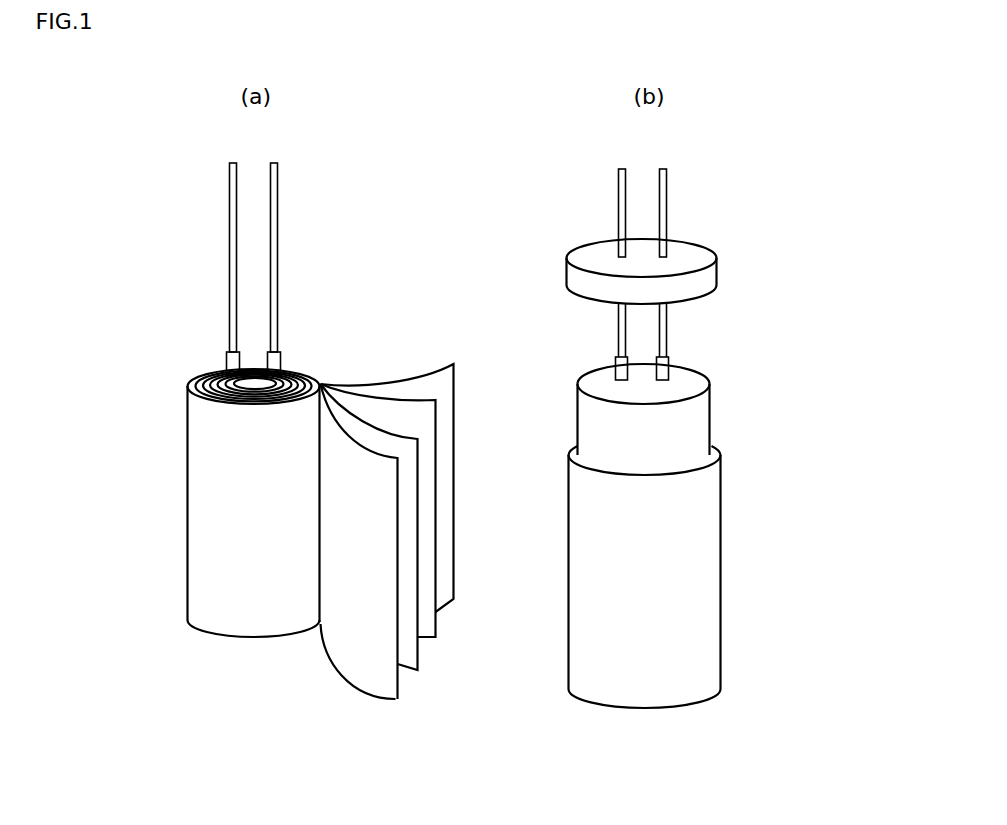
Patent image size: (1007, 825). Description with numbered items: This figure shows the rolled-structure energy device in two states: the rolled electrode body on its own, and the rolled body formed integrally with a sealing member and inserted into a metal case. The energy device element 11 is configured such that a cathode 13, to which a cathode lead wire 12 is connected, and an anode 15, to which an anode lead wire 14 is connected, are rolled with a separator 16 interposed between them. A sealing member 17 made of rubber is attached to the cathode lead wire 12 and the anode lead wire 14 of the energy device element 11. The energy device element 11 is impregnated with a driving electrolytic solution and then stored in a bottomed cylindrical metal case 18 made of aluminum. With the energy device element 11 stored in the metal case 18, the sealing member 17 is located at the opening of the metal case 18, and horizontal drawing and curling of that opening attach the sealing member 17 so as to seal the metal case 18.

The energy device element 11 is at (195, 632).
The cathode lead wire 12 is at (230, 258).
The cathode 13 is at (435, 640).
The anode lead wire 14 is at (277, 278).
The anode 15 is at (337, 676).
The separator 16 is at (437, 372).
The sealing member 17 is at (715, 283).
The metal case 18 is at (700, 623).